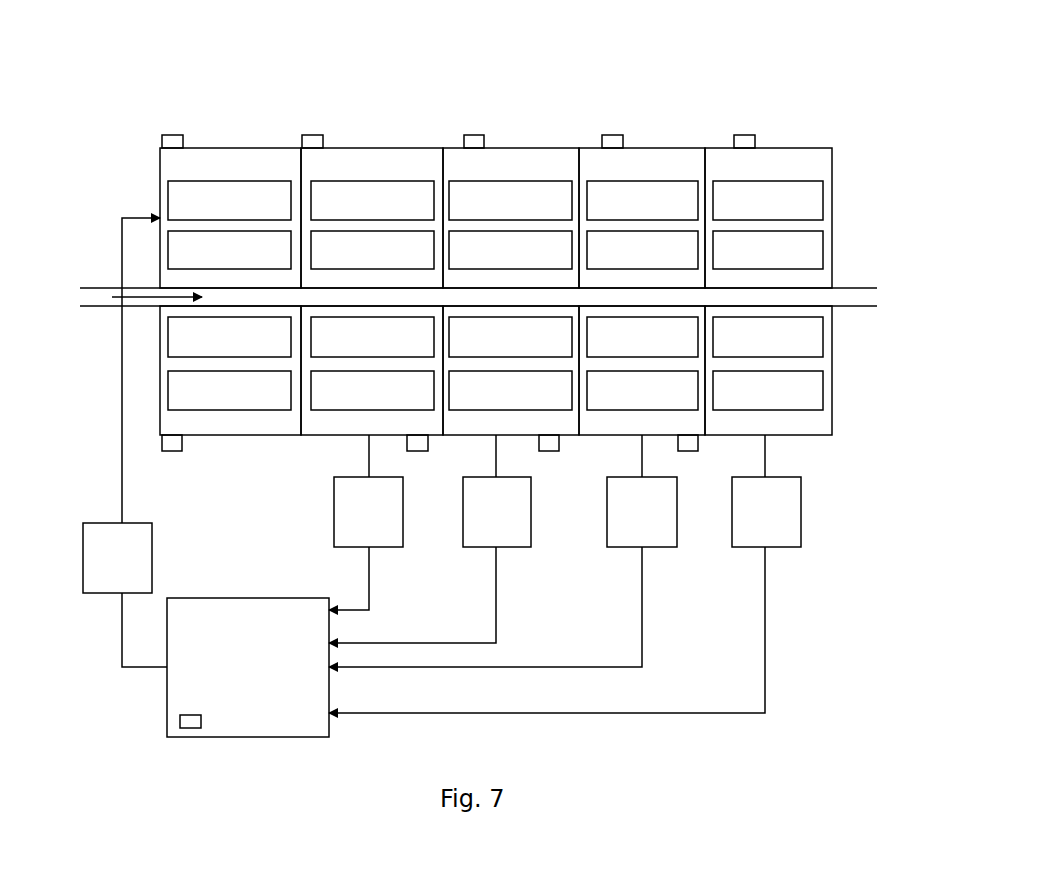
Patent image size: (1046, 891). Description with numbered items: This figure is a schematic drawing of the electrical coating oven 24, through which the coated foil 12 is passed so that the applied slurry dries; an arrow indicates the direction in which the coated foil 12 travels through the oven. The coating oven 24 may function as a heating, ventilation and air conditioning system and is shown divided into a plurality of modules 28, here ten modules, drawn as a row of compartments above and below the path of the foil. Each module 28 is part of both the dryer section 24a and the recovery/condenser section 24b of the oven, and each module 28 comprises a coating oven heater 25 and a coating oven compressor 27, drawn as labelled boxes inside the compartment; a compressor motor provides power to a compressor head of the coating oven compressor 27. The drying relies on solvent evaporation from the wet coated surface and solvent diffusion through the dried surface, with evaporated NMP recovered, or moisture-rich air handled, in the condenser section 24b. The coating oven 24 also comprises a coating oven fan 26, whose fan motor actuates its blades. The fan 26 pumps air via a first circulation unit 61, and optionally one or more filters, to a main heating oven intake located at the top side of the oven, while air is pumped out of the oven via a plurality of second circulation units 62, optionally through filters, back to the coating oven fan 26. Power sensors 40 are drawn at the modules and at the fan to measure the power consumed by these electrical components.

The coated foil 12 is at (92, 286).
The coating oven 24 is at (676, 162).
The dryer section 24a is at (385, 163).
The recovery/condenser section 24b is at (372, 291).
The coating oven heater 25 is at (495, 294).
The coating oven fan 26 is at (233, 679).
The coating oven compressor 27 is at (495, 295).
The module 28 is at (260, 165).
The power sensor 40 is at (490, 440).
The first circulation unit 61 is at (103, 572).
The second circulation unit 62 is at (354, 525).